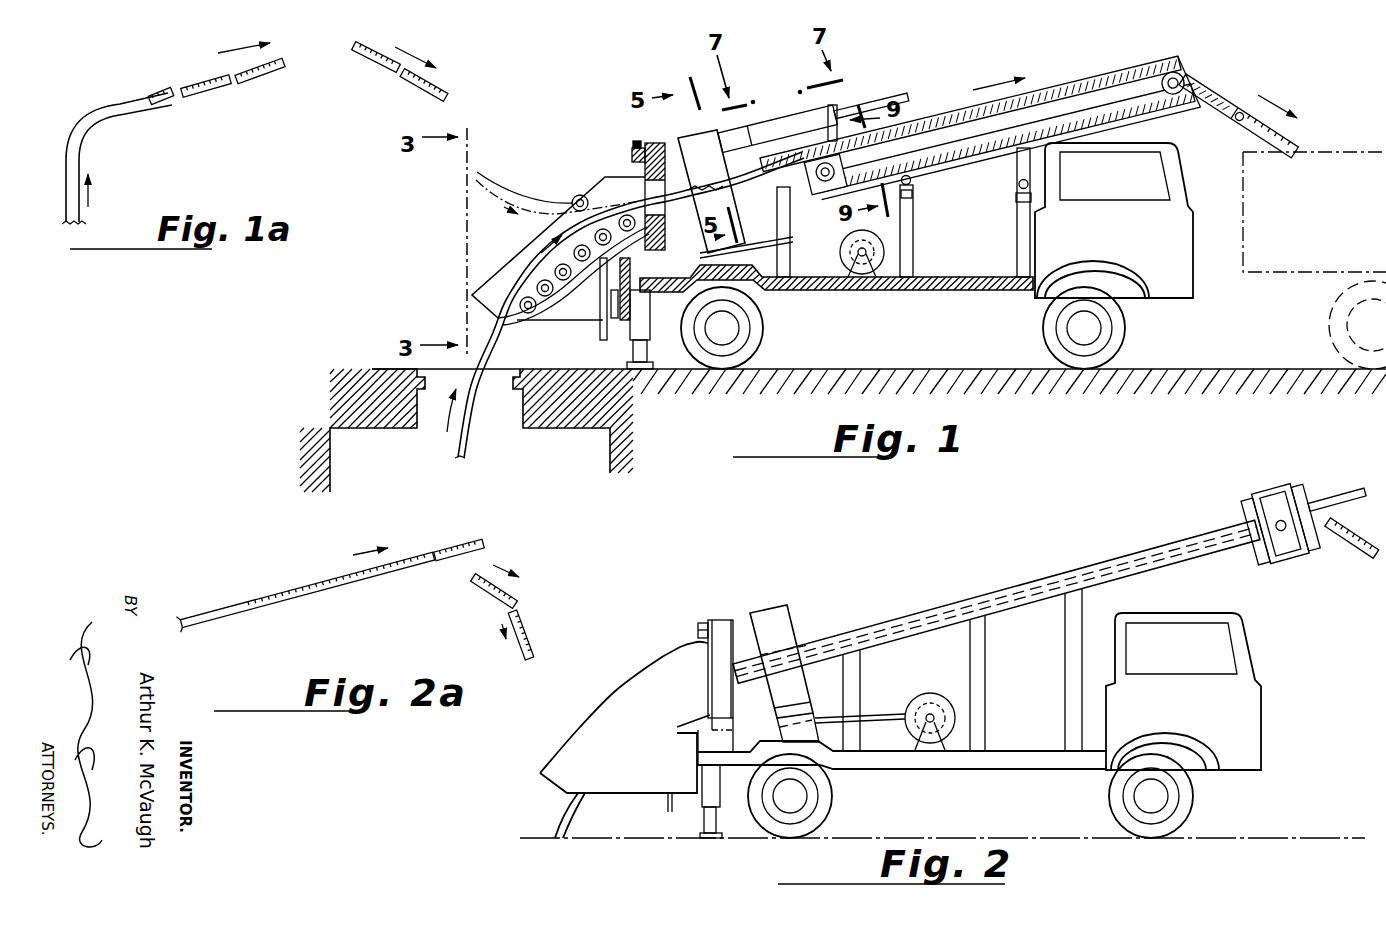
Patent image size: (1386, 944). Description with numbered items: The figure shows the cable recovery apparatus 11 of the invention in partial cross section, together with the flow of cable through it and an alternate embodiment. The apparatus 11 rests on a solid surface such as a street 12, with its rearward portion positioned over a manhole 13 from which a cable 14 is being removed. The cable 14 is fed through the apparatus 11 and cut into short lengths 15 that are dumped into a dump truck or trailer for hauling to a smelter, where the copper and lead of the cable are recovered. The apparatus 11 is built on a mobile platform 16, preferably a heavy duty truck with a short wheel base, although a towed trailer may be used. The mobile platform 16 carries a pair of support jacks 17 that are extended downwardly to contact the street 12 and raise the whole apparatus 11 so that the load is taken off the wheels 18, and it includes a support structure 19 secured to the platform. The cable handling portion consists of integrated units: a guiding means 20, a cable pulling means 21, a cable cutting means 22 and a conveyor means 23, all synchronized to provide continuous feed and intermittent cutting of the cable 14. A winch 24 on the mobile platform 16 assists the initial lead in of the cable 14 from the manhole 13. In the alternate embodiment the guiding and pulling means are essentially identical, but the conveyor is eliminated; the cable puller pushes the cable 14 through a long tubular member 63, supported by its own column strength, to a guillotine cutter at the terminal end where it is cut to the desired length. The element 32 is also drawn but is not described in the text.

In FIG. 1, the apparatus 11 is at (1158, 282).
In FIG. 1, the street 12 is at (1165, 369).
In FIG. 1, the manhole 13 is at (437, 397).
In FIG. 1A, the cable 14 is at (72, 157).
In FIG. 1, the cable 14 is at (473, 417).
In FIG. 2A, the cable 14 is at (262, 594).
In FIG. 2, the cable 14 is at (560, 816).
In FIG. 1A, the short lengths 15 is at (441, 90).
In FIG. 1, the short lengths 15 is at (1297, 143).
In FIG. 2A, the short lengths 15 is at (528, 630).
In FIG. 1, the mobile platform 16 is at (838, 285).
In FIG. 1, the support jacks 17 is at (652, 331).
In FIG. 1, the wheels 18 is at (752, 337).
In FIG. 1, the support structure 19 is at (1017, 228).
In FIG. 1, the guiding means 20 is at (588, 192).
In FIG. 2, the guiding means 20 is at (647, 662).
In FIG. 1, the cable pulling means 21 is at (704, 143).
In FIG. 2, the cable pulling means 21 is at (770, 607).
In FIG. 1, the cable cutting means 22 is at (838, 106).
In FIG. 2, the cable cutting means 22 is at (1261, 508).
In FIG. 1, the conveyor means 23 is at (1063, 88).
In FIG. 1, the winch 24 is at (884, 252).
In FIG. 2, the winch 24 is at (917, 696).
In FIG. 1, the guide wall 32 is at (646, 192).
In FIG. 2, the tubular member 63 is at (952, 597).